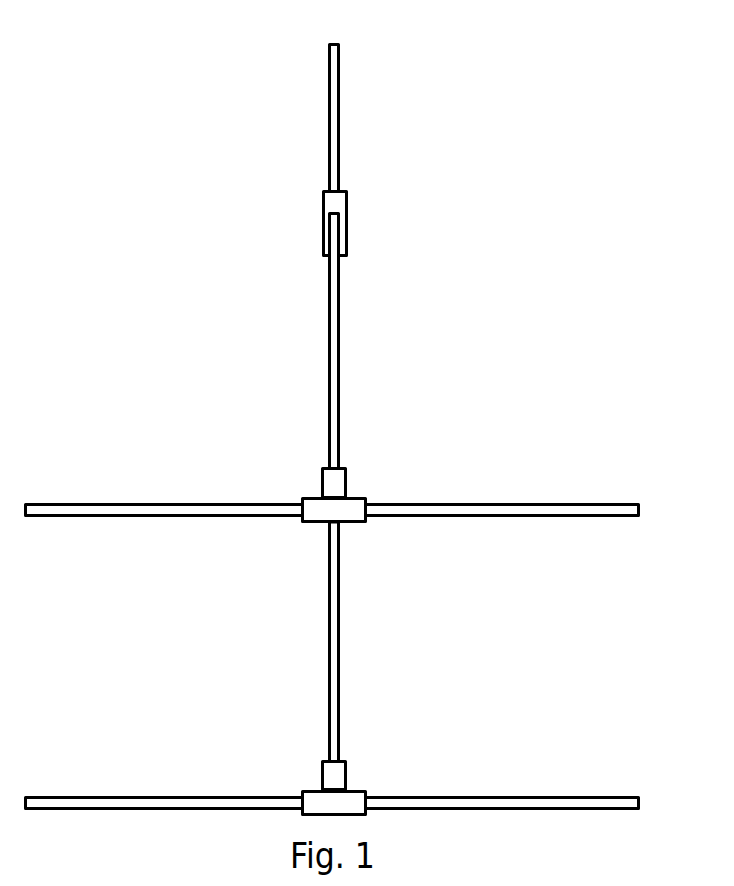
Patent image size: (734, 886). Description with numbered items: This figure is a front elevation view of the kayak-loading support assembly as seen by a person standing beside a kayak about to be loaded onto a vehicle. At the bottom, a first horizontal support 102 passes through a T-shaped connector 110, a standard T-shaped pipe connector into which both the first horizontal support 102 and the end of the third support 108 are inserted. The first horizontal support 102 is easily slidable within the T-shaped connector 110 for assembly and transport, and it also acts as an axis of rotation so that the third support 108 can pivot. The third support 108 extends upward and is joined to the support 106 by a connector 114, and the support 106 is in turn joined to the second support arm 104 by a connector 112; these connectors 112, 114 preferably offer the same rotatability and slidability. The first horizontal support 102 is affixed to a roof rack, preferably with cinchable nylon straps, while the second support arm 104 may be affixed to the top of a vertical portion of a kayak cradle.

The first horizontal support 102 is at (366, 759).
The second support arm 104 is at (364, 460).
The support 106 is at (404, 342).
The third support 108 is at (406, 386).
The T-shaped connector 110 is at (388, 758).
The connector 112 is at (395, 464).
The connector 114 is at (394, 180).